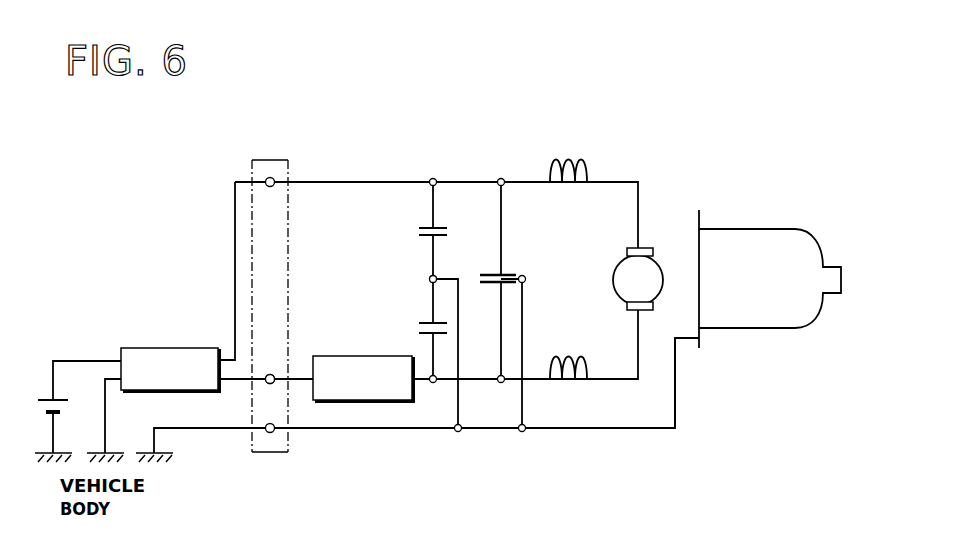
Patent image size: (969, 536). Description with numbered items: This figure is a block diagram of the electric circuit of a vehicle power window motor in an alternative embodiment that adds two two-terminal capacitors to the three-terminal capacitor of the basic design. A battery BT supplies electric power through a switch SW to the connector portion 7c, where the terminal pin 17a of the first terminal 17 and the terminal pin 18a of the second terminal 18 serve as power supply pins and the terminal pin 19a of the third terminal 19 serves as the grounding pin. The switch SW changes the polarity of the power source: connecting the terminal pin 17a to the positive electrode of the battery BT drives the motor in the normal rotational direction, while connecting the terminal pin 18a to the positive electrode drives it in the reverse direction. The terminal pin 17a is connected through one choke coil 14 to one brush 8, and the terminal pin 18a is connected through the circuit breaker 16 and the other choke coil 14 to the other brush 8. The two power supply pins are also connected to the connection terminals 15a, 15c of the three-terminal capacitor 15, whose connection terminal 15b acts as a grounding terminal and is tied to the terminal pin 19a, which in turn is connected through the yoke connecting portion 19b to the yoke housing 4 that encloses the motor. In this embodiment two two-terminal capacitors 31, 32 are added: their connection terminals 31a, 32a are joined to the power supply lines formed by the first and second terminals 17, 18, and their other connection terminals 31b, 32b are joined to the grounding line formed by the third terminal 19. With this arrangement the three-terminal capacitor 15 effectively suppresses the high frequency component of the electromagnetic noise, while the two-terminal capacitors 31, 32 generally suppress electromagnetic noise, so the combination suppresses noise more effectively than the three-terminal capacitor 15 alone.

The yoke housing 4 is at (745, 229).
The connector portion 7c is at (283, 161).
The brushes 8 is at (653, 254).
The choke coils 14 is at (572, 161).
The capacitor 15 is at (508, 274).
The connection terminal 15a is at (499, 222).
The connection terminal 15b is at (528, 280).
The connection terminal 15c is at (501, 339).
The circuit breaker 16 is at (400, 401).
The first terminal 17 is at (330, 181).
The terminal pin 17a is at (265, 181).
The second terminal 18 is at (292, 378).
The terminal pin 18a is at (269, 384).
The third terminal 19 is at (340, 435).
The terminal pin 19a is at (270, 433).
The yoke connecting portion 19b is at (678, 392).
The two-terminal capacitor 31 is at (428, 228).
The connection terminal 31a is at (432, 205).
The connection terminal 31b is at (432, 257).
The two-terminal capacitor 32 is at (427, 322).
The connection terminal 32a is at (432, 344).
The connection terminal 32b is at (433, 289).
The switch SW is at (175, 346).
The battery BT is at (50, 396).